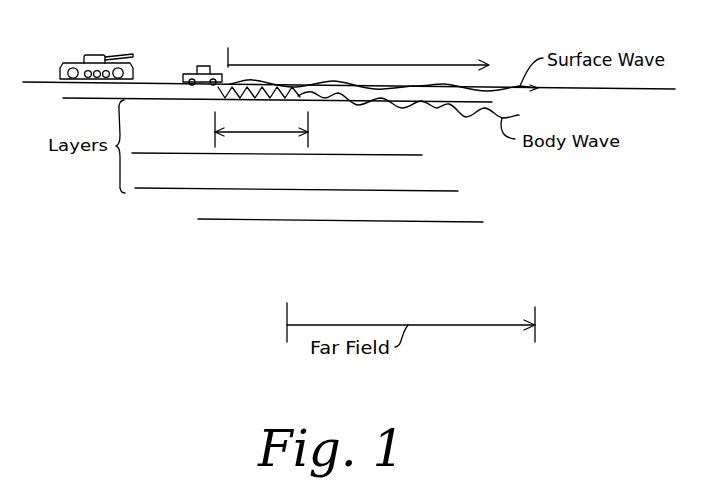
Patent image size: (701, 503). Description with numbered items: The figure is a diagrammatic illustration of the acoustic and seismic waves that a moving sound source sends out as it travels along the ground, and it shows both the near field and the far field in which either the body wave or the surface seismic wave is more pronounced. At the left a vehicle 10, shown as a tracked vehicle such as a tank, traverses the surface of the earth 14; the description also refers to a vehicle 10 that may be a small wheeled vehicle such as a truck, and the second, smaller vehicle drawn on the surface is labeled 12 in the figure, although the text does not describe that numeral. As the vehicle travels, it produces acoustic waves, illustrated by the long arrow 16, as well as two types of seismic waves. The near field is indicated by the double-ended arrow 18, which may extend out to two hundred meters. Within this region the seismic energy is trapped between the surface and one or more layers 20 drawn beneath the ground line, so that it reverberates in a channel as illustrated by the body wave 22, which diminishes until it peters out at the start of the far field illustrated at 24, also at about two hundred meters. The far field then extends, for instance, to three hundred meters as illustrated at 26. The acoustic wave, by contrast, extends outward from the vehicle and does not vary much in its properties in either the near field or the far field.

The vehicle 10 is at (98, 55).
The sensor vehicle 12 is at (204, 66).
The surface of the earth 14 is at (40, 82).
The acoustic wave 16 is at (433, 66).
The near field 18 is at (255, 132).
The layers 20 is at (198, 103).
The body wave 22 is at (266, 99).
The start of the far field 24 is at (287, 311).
The far field extent 26 is at (537, 313).